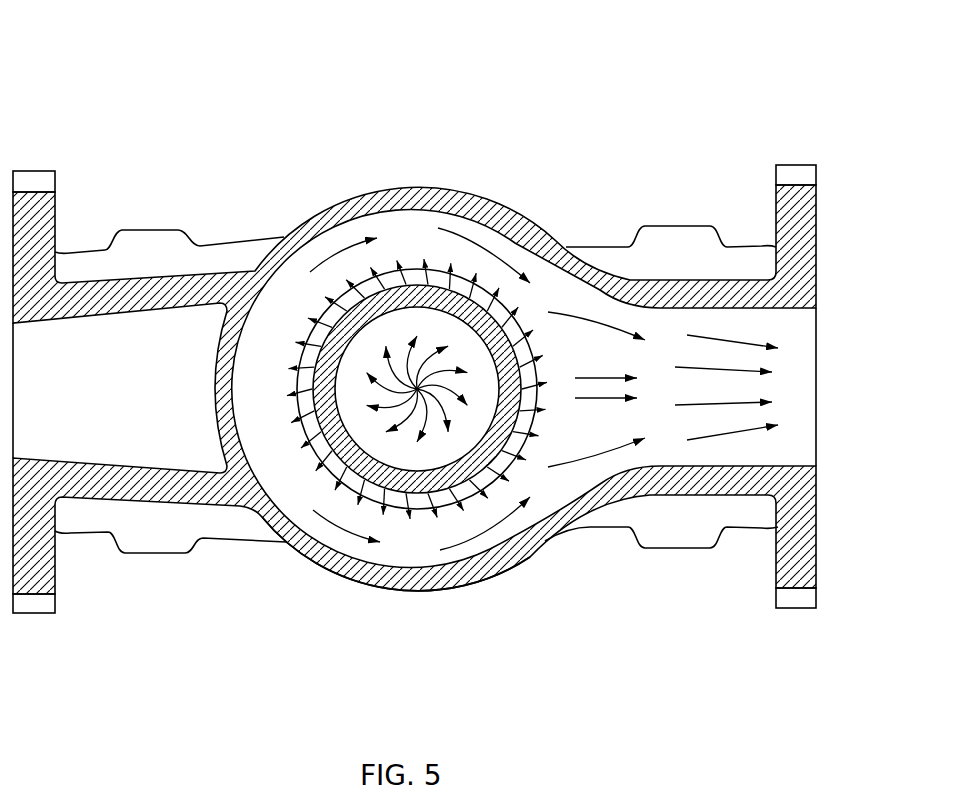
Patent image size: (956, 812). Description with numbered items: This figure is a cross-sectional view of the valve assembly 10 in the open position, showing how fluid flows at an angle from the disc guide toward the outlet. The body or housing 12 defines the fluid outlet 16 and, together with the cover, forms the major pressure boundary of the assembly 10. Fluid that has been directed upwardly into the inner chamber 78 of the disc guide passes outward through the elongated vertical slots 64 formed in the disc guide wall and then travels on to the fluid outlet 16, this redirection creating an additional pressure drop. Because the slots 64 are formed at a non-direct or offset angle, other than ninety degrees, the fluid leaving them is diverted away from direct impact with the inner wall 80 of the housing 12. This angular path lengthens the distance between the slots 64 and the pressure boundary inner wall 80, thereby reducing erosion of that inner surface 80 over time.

The valve assembly 10 is at (93, 112).
The housing 12 is at (317, 212).
The fluid outlet 16 is at (806, 378).
The elongated vertical slots 64 is at (477, 477).
The inner chamber 78 is at (425, 337).
The inner wall 80 is at (405, 560).